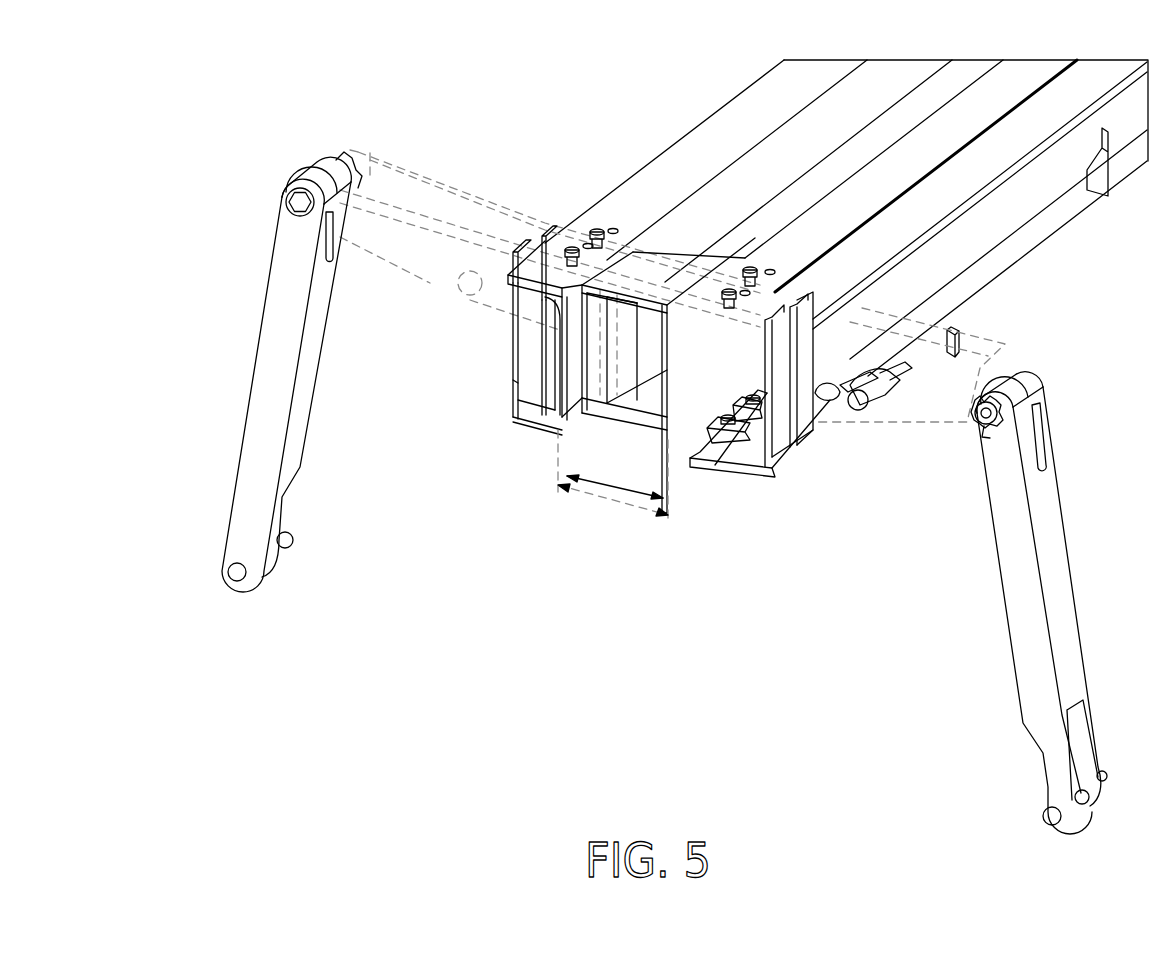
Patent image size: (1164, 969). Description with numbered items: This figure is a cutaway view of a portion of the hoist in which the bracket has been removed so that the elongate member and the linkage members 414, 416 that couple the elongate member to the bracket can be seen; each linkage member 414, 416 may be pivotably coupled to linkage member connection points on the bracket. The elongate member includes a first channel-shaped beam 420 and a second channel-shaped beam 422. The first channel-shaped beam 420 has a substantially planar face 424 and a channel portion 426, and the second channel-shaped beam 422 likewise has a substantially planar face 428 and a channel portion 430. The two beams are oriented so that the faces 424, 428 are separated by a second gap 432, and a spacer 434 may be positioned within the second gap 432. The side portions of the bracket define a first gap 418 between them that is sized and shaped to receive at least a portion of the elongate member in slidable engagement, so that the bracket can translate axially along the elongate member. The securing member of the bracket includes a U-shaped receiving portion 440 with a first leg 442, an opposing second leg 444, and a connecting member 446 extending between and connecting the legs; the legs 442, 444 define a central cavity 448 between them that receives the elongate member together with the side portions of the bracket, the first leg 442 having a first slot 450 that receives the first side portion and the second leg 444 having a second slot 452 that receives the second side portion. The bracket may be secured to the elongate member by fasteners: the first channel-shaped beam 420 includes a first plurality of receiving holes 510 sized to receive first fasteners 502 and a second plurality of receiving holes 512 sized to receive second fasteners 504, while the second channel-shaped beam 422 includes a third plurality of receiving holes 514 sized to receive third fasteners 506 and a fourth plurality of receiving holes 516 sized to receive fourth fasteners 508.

The linkage member 414 is at (247, 418).
The linkage member 416 is at (1075, 562).
The first gap 418 is at (610, 496).
The first channel-shaped beam 420 is at (781, 80).
The second channel-shaped beam 422 is at (1012, 76).
The substantially planar face 424 is at (545, 230).
The channel portion 426 is at (548, 340).
The substantially planar face 428 is at (658, 332).
The channel portion 430 is at (697, 393).
The second gap 432 is at (612, 480).
The spacer 434 is at (606, 418).
The U-shaped receiving portion 440 is at (820, 460).
The first leg 442 is at (550, 349).
The second leg 444 is at (823, 427).
The connecting member 446 is at (765, 460).
The central cavity 448 is at (533, 353).
The first slot 450 is at (530, 237).
The second slot 452 is at (824, 316).
The first plurality of fasteners 502 is at (597, 218).
The second plurality of fasteners 504 is at (530, 394).
The third plurality of fasteners 506 is at (777, 265).
The fourth plurality of fasteners 508 is at (858, 403).
The first plurality of receiving holes 510 is at (622, 218).
The second plurality of receiving holes 512 is at (506, 389).
The third plurality of receiving holes 514 is at (767, 278).
The fourth plurality of receiving holes 516 is at (722, 447).